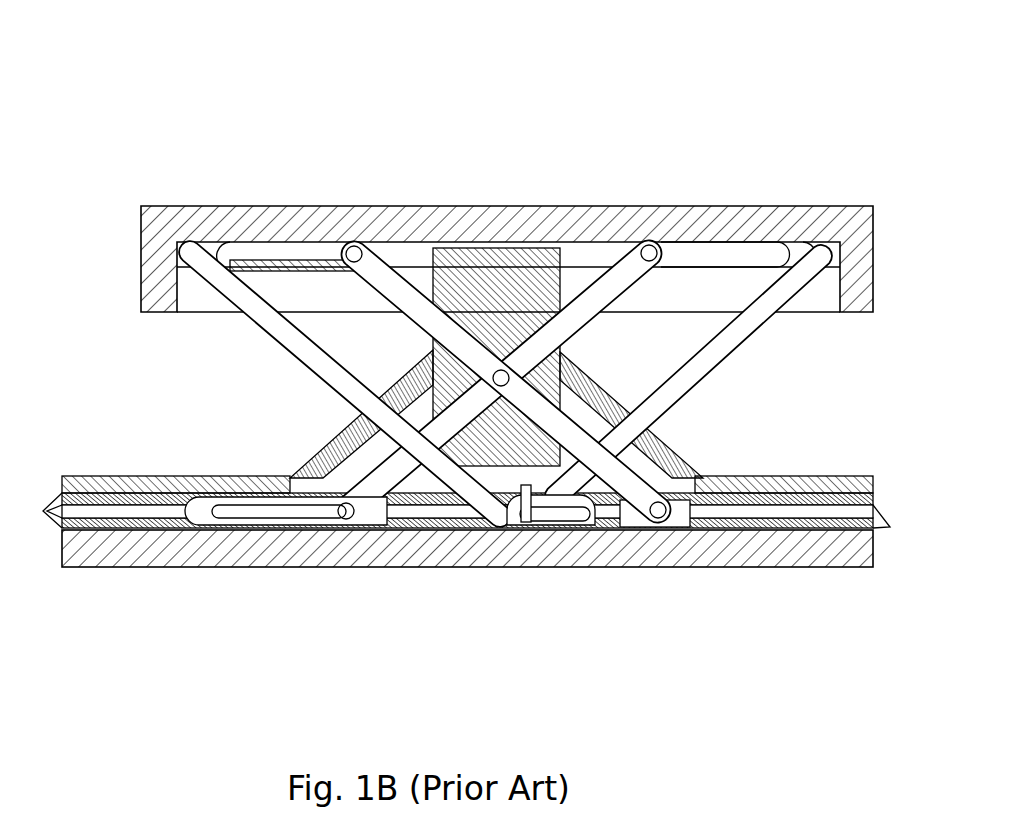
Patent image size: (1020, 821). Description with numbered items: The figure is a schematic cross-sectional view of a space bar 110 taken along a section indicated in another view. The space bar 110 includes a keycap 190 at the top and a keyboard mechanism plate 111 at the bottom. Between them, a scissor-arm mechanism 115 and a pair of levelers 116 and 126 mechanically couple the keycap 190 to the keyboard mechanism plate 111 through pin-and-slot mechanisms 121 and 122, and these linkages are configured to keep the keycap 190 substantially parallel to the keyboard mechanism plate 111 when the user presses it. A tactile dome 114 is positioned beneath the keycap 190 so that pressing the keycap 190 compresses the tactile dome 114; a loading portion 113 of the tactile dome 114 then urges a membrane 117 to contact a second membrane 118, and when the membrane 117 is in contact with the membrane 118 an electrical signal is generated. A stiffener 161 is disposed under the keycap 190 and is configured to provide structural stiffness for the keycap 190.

The space bar 110 is at (329, 76).
The keyboard mechanism plate 111 is at (517, 553).
The loading portion 113 is at (547, 435).
The tactile dome 114 is at (577, 375).
The scissor-arm mechanism 115 is at (638, 490).
The leveler 116 is at (745, 320).
The membrane 117 is at (770, 493).
The membrane 118 is at (782, 518).
The pin-and-slot mechanism 121 is at (302, 252).
The pin-and-slot mechanism 122 is at (327, 512).
The leveler 126 is at (287, 332).
The stiffener 161 is at (747, 251).
The keycap 190 is at (531, 208).